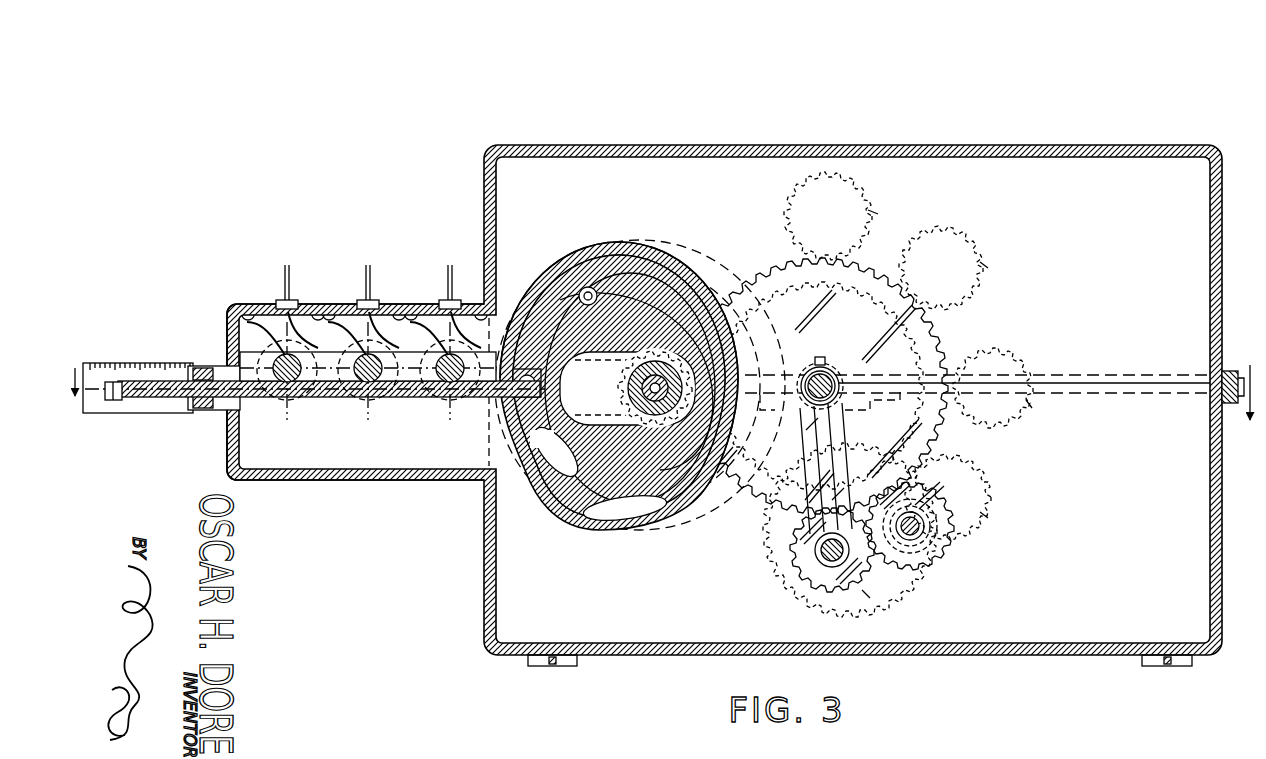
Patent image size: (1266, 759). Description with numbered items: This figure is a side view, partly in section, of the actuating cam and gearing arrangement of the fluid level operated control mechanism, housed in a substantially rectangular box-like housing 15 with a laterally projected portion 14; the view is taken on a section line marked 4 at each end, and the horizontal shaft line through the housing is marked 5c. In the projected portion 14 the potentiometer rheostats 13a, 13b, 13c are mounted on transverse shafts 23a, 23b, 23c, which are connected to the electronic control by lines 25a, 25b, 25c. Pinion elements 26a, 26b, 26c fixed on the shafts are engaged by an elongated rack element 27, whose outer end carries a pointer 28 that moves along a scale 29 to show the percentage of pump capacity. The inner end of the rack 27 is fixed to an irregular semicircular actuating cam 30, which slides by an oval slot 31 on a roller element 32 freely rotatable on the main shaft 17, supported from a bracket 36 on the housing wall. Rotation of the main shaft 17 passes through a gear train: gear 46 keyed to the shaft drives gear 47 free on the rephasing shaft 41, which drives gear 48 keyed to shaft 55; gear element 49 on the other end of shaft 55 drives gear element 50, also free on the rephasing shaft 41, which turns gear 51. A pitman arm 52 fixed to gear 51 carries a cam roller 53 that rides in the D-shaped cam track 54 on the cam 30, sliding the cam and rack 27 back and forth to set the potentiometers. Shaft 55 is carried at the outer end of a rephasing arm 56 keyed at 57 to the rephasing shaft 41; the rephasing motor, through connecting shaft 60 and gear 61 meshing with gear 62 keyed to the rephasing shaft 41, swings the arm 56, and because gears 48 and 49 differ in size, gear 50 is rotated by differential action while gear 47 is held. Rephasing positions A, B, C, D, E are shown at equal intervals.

The housing 15 is at (1054, 150).
The laterally projected portion 14 is at (425, 304).
The actuating cam 30 is at (530, 262).
The cam track 54 is at (572, 250).
The gear 51 is at (678, 300).
The main shaft 17 is at (658, 325).
The pitman arm 52 is at (540, 336).
The cam roller 53 is at (527, 369).
The oval slot 31 is at (619, 390).
The roller element 32 is at (694, 440).
The gear 46 is at (690, 482).
The gear 47 is at (916, 346).
The gear 48 is at (762, 573).
The shaft 55 is at (824, 556).
The rephasing position A is at (806, 618).
The rephasing position B is at (988, 498).
The rephasing position C is at (1010, 343).
The rephasing position D is at (968, 233).
The rephasing position E is at (858, 182).
The gear element 49 is at (875, 215).
The connecting shaft 60 is at (914, 532).
The gear 61 is at (946, 557).
The gear 62 is at (912, 474).
The gear element 50 is at (946, 432).
The bracket 36 is at (850, 425).
The rephasing arm 56 is at (838, 448).
The key 57 is at (818, 356).
The rephasing shaft 41 is at (824, 374).
The shaft 5c is at (1058, 358).
The line 25a is at (289, 268).
The line 25b is at (371, 270).
The line 25c is at (451, 268).
The potentiometer rheostat 13a is at (265, 340).
The potentiometer rheostat 13b is at (333, 322).
The potentiometer rheostat 13c is at (420, 335).
The pointer 28 is at (113, 382).
The scale 29 is at (137, 362).
The rack element 27 is at (388, 398).
The pinion element 26a is at (272, 396).
The pinion element 26b is at (355, 398).
The pinion element 26c is at (440, 400).
The shaft 23a is at (288, 384).
The shaft 23b is at (369, 384).
The shaft 23c is at (451, 384).
The section line 4- 4 is at (663, 414).